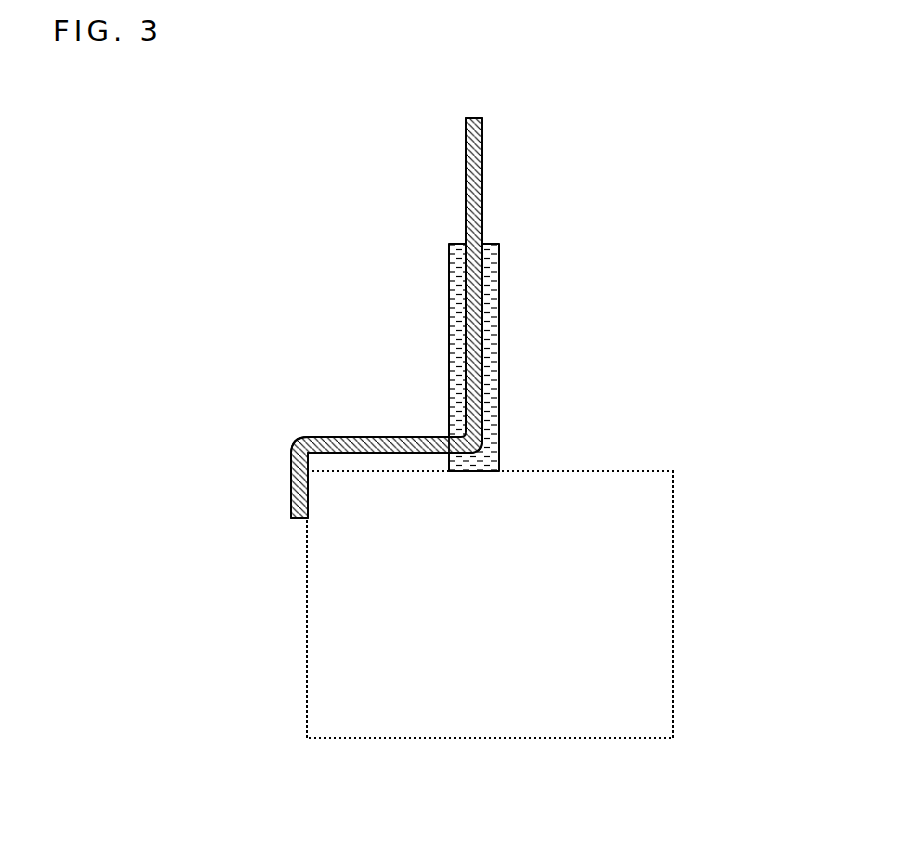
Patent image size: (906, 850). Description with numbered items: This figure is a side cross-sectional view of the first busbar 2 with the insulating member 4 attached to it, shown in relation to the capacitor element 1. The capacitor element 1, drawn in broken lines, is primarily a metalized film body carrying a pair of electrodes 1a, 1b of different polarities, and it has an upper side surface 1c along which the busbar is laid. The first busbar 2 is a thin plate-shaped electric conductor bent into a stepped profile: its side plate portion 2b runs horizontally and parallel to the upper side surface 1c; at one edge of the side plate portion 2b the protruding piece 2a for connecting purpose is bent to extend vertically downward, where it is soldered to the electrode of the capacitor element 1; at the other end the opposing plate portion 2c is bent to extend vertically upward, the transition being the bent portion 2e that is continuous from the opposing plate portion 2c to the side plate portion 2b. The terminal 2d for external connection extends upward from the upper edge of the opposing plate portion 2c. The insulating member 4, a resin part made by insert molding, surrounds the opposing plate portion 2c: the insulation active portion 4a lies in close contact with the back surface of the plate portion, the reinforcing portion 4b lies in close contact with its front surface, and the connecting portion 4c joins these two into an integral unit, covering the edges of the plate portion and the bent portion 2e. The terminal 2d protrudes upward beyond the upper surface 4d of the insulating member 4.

The capacitor element 1 is at (492, 740).
The electrode 1a is at (307, 608).
The electrode 1b is at (673, 562).
The upper side surface 1c is at (586, 471).
The first busbar 2 is at (398, 402).
The protruding piece for connecting purpose 2a is at (291, 472).
The side plate portion 2b is at (388, 437).
The opposing plate portion 2c is at (472, 285).
The terminal for external connection 2d is at (464, 137).
The bent portion 2e is at (483, 450).
The insulating member 4 is at (505, 312).
The insulation active portion 4a is at (490, 371).
The reinforcing portion 4b is at (448, 295).
The connecting portion 4c is at (463, 462).
The upper surface 4d is at (487, 243).